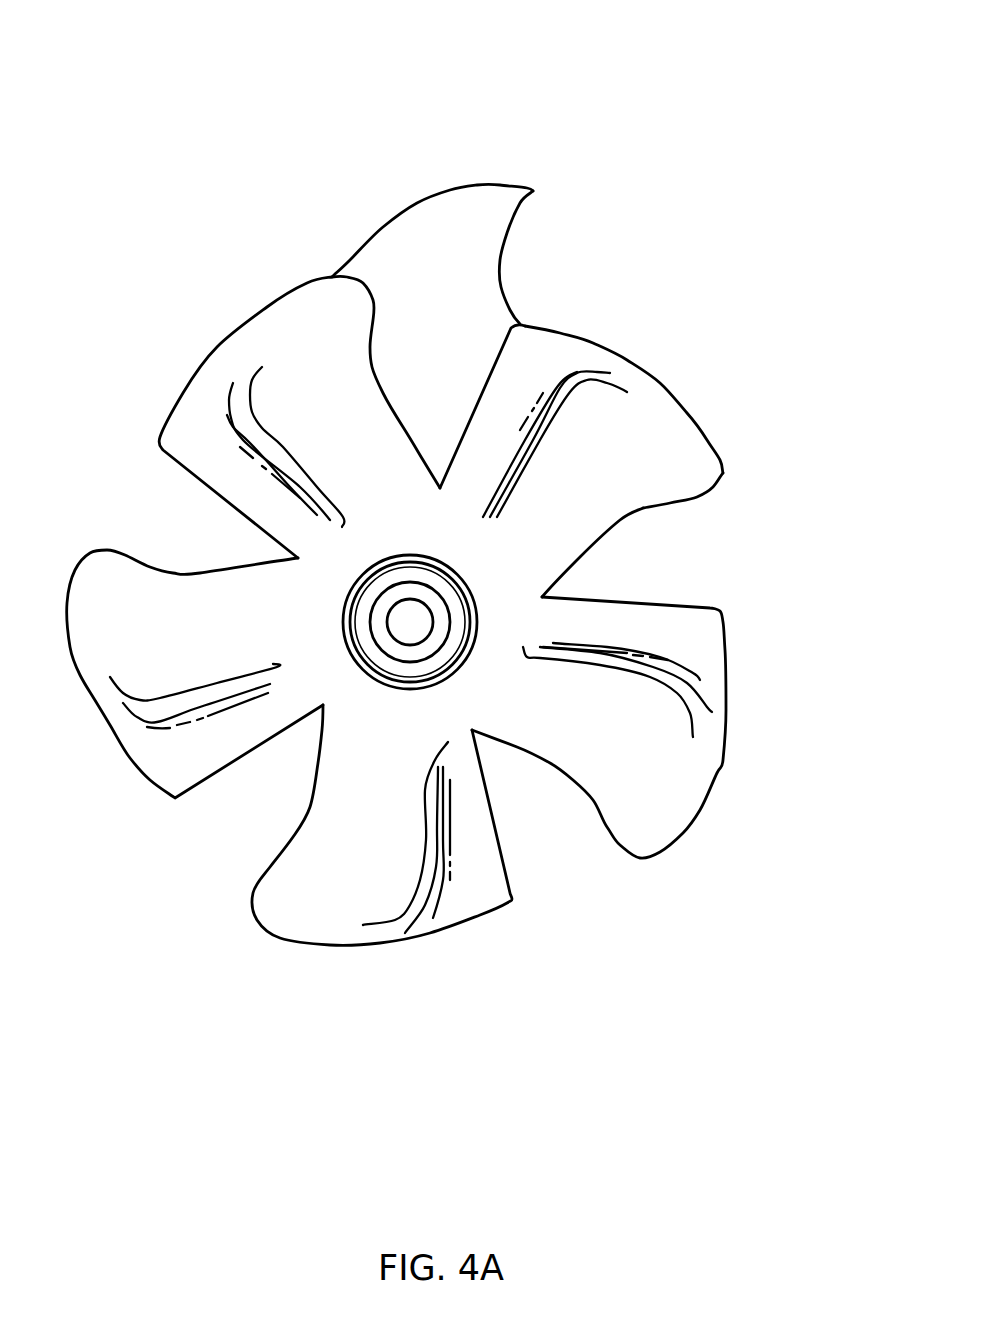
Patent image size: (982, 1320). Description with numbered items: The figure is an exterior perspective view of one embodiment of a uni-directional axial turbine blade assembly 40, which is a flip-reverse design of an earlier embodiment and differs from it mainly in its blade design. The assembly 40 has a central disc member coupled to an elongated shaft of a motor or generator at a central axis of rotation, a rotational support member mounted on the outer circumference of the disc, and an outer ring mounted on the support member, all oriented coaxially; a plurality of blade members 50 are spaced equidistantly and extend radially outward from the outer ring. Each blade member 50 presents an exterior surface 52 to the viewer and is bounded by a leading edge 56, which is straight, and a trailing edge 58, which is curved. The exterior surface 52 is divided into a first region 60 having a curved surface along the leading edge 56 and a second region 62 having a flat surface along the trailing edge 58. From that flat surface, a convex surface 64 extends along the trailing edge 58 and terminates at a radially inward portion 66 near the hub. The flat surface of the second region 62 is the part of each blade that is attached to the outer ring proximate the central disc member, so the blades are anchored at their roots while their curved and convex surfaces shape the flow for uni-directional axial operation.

The uni-directional axial turbine blade assembly 40 is at (447, 78).
The blade member 50 is at (450, 335).
The exterior surface 52 is at (640, 415).
The leading edge 56 is at (503, 847).
The trailing edge 58 is at (173, 573).
The first region 60 is at (478, 880).
The second region 62 is at (490, 535).
The convex surface 64 is at (262, 397).
The radially inward portion 66 is at (687, 483).